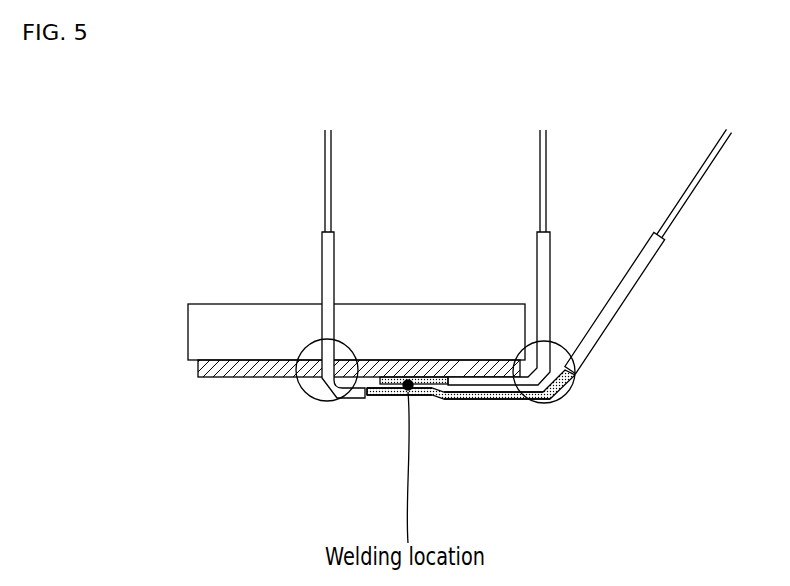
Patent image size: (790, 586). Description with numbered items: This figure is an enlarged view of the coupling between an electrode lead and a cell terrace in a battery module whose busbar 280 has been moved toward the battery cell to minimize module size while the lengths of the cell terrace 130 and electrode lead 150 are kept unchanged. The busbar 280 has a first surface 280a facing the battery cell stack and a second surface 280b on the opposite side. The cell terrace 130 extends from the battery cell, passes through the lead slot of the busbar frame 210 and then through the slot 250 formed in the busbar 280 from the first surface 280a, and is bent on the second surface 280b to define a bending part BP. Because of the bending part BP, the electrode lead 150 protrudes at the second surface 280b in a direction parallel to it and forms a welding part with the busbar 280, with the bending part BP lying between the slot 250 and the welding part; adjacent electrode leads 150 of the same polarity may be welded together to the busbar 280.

The cell terrace 130 is at (322, 251).
The electrode lead 150 is at (399, 378).
The busbar frame 210 is at (461, 324).
The slot 250 is at (330, 398).
The busbar 280 is at (368, 399).
The first surface 280a is at (383, 377).
The second surface 280b is at (469, 400).
The bending part BP is at (317, 393).